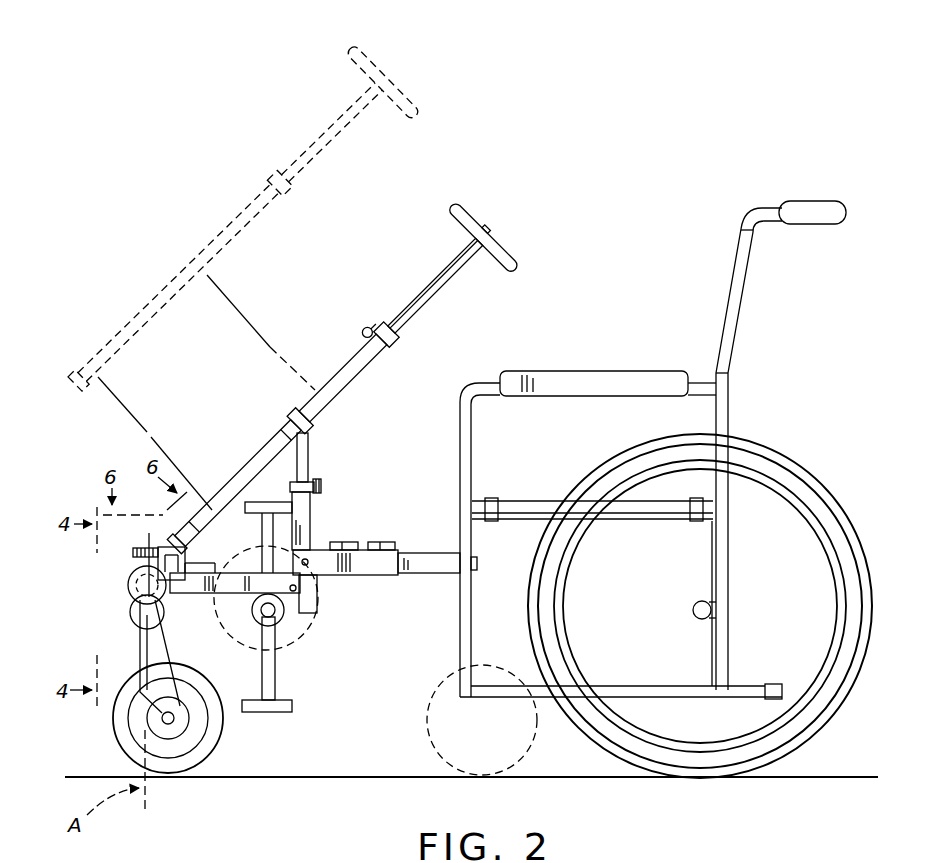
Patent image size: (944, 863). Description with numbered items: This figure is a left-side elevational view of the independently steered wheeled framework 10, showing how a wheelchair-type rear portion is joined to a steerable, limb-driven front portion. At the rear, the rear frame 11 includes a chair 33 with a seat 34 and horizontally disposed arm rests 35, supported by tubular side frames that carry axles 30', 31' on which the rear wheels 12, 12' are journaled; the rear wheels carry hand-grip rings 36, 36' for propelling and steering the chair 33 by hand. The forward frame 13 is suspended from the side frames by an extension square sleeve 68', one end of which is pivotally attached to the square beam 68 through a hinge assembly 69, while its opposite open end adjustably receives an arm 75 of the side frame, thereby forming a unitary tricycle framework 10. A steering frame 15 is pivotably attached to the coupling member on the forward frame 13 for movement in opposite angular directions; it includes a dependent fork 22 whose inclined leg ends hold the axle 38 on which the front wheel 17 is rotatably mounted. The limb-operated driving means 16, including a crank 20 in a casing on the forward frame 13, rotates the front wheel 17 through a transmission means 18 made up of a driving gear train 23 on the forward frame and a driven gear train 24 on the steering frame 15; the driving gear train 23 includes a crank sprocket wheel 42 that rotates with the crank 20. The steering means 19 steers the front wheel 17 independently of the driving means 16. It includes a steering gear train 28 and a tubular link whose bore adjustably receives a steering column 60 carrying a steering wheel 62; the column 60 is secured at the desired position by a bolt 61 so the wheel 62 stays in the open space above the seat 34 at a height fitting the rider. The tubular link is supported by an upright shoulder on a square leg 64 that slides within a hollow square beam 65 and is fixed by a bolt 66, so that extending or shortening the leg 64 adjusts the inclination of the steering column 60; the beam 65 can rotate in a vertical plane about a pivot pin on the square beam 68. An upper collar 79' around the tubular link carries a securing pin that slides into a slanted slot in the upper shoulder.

The independently steered framework 10 is at (597, 221).
The rear frame 11 is at (453, 585).
The rear wheel 12 is at (700, 603).
The forward frame 13 is at (132, 560).
The steering frame 15 is at (140, 640).
The limb-operated driving means 16 is at (246, 723).
The front wheel 17 is at (173, 766).
The transmission means 18 is at (124, 598).
The steering means 19 is at (228, 220).
The crank 20 is at (290, 717).
The dependent fork 22 is at (138, 700).
The driving gear train 23 is at (228, 550).
The driven gear train 24 is at (181, 656).
The steering gear train 28 is at (150, 531).
The axle 30' is at (671, 591).
The axle 31' is at (695, 852).
The chair 33 is at (738, 385).
The seat 34 is at (550, 498).
The arm rests 35 is at (601, 372).
The hand-grip ring 36 is at (700, 575).
The hand-grip ring 36' is at (759, 852).
The rear wheel 12' is at (817, 852).
The axle 38 is at (173, 722).
The crank sprocket wheel 42 is at (311, 644).
The steering column 60 is at (427, 285).
The bolt 61 is at (370, 320).
The steering wheel 62 is at (463, 215).
The square leg 64 is at (306, 455).
The hollow square beam 65 is at (303, 513).
The bolt 66 is at (318, 482).
The square beam 68 is at (235, 554).
The extension square sleeve 68' is at (362, 528).
The hinge assembly 69 is at (318, 613).
The arm 75 is at (435, 569).
The upper collar 79' is at (265, 396).